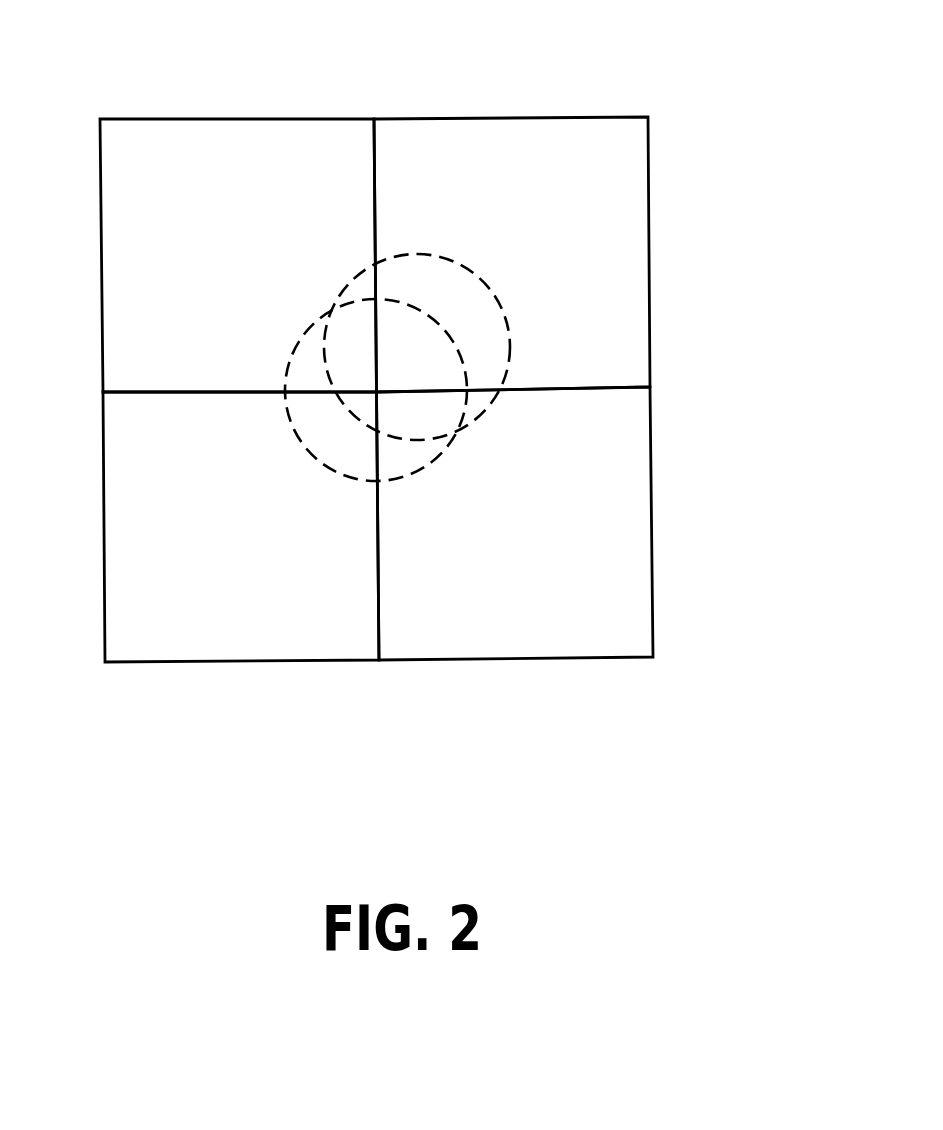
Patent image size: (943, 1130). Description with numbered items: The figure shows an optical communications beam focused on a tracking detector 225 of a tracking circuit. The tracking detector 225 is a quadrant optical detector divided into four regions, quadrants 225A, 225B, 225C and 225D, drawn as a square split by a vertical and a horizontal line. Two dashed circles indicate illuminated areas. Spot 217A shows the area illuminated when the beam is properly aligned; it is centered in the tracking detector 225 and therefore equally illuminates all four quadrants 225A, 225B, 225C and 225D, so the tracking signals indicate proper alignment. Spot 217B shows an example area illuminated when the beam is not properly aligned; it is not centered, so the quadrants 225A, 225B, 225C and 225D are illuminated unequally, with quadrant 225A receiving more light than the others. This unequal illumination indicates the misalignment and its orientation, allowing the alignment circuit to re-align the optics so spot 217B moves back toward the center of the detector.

The tracking detector 225 is at (809, 37).
The quadrant 225A is at (598, 116).
The quadrant 225B is at (133, 118).
The quadrant 225C is at (150, 663).
The quadrant 225D is at (585, 660).
The spot 217A is at (298, 337).
The spot 217B is at (487, 405).